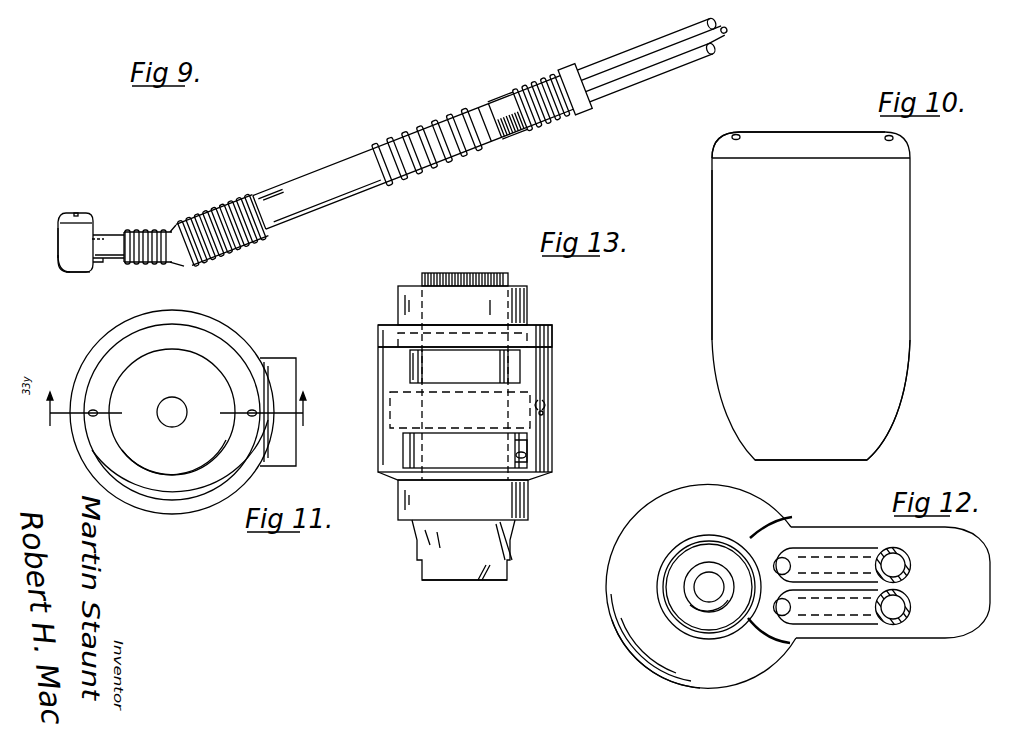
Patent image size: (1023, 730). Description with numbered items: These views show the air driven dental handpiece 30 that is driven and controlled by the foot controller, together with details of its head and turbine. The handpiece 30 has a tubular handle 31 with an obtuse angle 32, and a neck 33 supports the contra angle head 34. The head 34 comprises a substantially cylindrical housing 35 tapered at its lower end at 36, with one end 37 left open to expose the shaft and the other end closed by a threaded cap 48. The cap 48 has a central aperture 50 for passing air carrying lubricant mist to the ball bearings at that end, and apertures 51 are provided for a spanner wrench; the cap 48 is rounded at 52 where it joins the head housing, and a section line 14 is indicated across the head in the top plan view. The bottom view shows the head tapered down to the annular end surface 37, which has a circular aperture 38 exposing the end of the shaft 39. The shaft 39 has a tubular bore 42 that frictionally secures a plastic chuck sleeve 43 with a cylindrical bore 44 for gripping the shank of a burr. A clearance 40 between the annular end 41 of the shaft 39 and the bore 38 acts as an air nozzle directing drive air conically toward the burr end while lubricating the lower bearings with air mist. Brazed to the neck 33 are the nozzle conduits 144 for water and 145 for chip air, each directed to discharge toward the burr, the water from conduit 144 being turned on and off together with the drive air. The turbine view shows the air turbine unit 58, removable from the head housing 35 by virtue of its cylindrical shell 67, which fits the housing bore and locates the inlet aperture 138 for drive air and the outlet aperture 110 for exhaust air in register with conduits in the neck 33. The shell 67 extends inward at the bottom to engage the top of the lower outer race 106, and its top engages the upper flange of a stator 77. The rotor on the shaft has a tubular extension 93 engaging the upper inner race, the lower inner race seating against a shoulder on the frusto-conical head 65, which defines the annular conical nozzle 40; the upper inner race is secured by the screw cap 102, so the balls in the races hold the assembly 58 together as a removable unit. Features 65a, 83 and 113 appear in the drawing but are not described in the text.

In FIG. 9, the handpiece 30 is at (300, 166).
In FIG. 9, the tubular handle 31 is at (352, 162).
In FIG. 9, the obtuse angle 32 is at (182, 266).
In FIG. 9, the neck 33 is at (110, 236).
In FIG. 11, the neck 33 is at (288, 380).
In FIG. 12, the neck 33 is at (862, 532).
In FIG. 9, the contra angle head 34 is at (64, 231).
In FIG. 10, the contra angle head 34 is at (900, 205).
In FIG. 11, the contra angle head 34 is at (76, 366).
In FIG. 9, the cylindrical housing 35 is at (58, 245).
In FIG. 10, the cylindrical housing 35 is at (712, 287).
In FIG. 9, the tapered lower end 36 is at (62, 268).
In FIG. 10, the tapered lower end 36 is at (892, 420).
In FIG. 9, the open end 37 is at (78, 273).
In FIG. 10, the open end 37 is at (845, 462).
In FIG. 12, the open end 37 is at (735, 540).
In FIG. 12, the circular aperture 38 is at (710, 542).
In FIG. 12, the shaft 39 is at (690, 560).
In FIG. 12, the clearance 40 is at (707, 545).
In FIG. 12, the annular end 41 is at (684, 589).
In FIG. 12, the tubular bore 42 is at (700, 601).
In FIG. 12, the plastic chuck sleeve 43 is at (710, 602).
In FIG. 12, the cylindrical bore 44 is at (709, 587).
In FIG. 9, the threaded cap 48 is at (75, 213).
In FIG. 10, the threaded cap 48 is at (826, 142).
In FIG. 11, the threaded cap 48 is at (228, 358).
In FIG. 11, the central aperture 50 is at (186, 410).
In FIG. 10, the apertures 51 is at (740, 135).
In FIG. 11, the apertures 51 is at (97, 410).
In FIG. 10, the rounded portion 52 is at (722, 144).
In FIG. 11, the section line 14- 14 is at (174, 423).
In FIG. 13, the air turbine unit 58 is at (554, 372).
In FIG. 13, the frusto-conical head 65 is at (470, 570).
In FIG. 13, the tapered nozzle portion 65a is at (512, 556).
In FIG. 13, the cylindrical shell 67 is at (390, 357).
In FIG. 13, the stator 77 is at (553, 336).
In FIG. 13, the retaining detent 83 is at (546, 405).
In FIG. 13, the tubular extension 93 is at (432, 455).
In FIG. 13, the screw cap 102 is at (510, 280).
In FIG. 13, the lower outer race 106 is at (530, 490).
In FIG. 13, the outlet aperture 110 is at (526, 455).
In FIG. 13, the upper sleeve 113 is at (520, 306).
In FIG. 13, the inlet aperture 138 is at (455, 384).
In FIG. 12, the nozzle conduit 144 is at (818, 553).
In FIG. 12, the nozzle conduit 145 is at (830, 622).